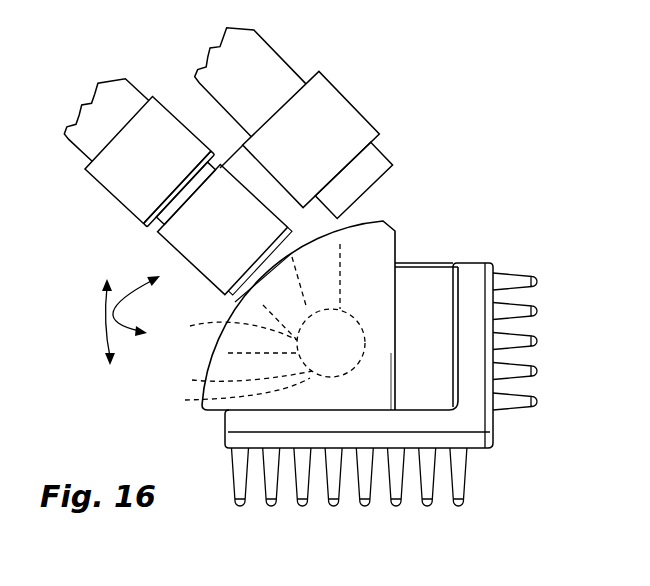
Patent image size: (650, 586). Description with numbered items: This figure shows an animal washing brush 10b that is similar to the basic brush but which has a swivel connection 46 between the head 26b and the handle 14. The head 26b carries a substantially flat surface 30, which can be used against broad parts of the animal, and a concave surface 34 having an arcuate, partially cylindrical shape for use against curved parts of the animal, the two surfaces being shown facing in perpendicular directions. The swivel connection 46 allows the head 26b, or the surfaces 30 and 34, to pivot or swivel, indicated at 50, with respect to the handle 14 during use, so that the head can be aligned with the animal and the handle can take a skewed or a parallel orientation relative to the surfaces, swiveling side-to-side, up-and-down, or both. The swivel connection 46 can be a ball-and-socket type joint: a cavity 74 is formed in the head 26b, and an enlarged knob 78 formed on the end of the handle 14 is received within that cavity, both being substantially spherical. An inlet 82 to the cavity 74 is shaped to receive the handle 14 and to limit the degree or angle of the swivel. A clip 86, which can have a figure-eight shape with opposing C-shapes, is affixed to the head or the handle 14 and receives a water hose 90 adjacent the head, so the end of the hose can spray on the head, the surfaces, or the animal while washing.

The brush 10b is at (480, 227).
The handle 14 is at (119, 201).
The clip 86 is at (325, 110).
The water hose 90 is at (387, 157).
The swivel connection 46 is at (364, 238).
The swivel 50 is at (115, 318).
The enlarged knob 78 is at (198, 321).
The inlet 82 is at (213, 377).
The cavity 74 is at (200, 400).
The head 26b is at (493, 267).
The concave surface 34 is at (487, 331).
The flat surface 30 is at (418, 448).